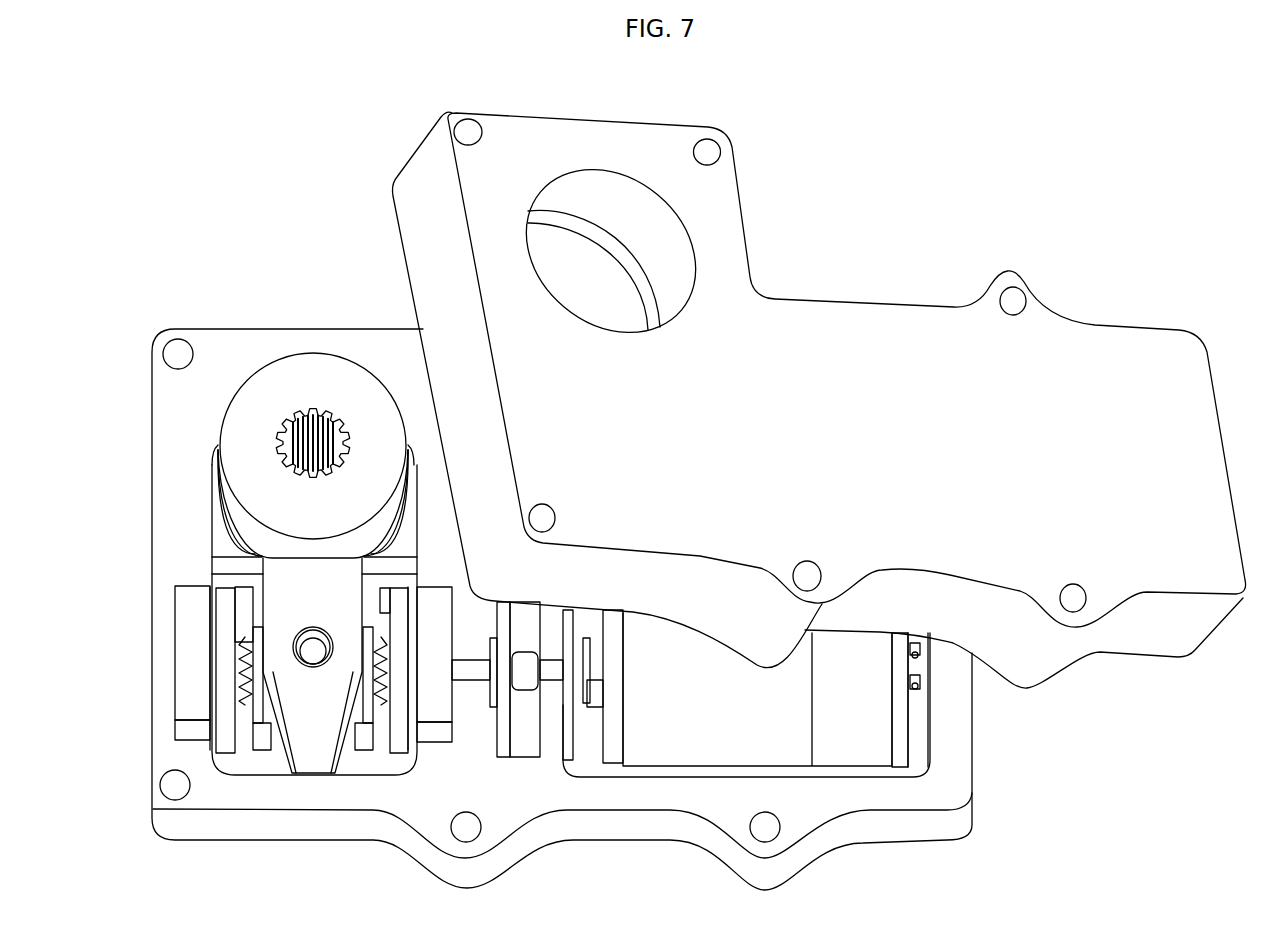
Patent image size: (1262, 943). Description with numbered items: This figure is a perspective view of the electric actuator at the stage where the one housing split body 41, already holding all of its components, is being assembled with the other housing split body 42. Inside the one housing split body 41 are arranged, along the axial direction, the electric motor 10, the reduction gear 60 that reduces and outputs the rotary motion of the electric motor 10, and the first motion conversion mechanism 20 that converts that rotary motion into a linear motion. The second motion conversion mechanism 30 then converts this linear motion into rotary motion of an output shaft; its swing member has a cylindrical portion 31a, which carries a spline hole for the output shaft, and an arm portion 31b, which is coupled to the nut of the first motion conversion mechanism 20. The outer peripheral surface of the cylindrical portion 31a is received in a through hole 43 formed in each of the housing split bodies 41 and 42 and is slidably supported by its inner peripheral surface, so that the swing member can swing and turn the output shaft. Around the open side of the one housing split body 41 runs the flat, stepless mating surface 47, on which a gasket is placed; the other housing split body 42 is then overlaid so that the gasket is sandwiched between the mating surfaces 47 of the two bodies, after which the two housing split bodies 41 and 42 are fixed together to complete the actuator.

The electric motor 10 is at (666, 735).
The first motion conversion mechanism 20 is at (271, 748).
The second motion conversion mechanism 30 is at (252, 531).
The cylindrical portion 31a is at (319, 378).
The arm portion 31b is at (276, 672).
The one housing split body 41 is at (230, 326).
The other housing split body 42 is at (857, 297).
The through hole 43 is at (614, 196).
The mating surface 47 is at (423, 799).
The reduction gear 60 is at (500, 750).